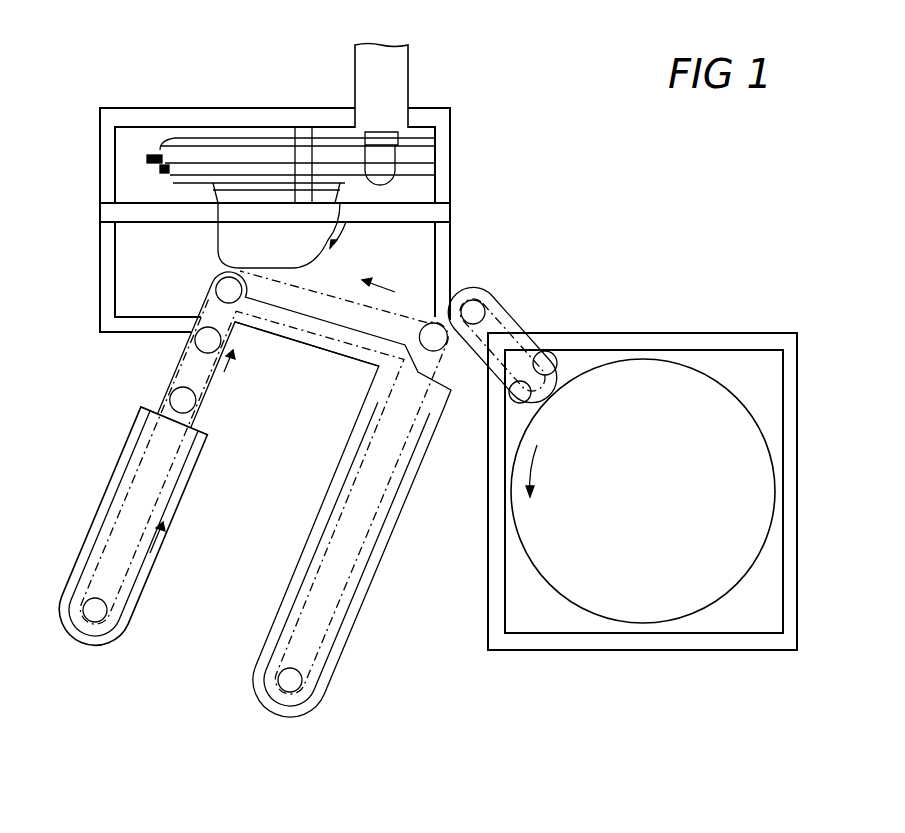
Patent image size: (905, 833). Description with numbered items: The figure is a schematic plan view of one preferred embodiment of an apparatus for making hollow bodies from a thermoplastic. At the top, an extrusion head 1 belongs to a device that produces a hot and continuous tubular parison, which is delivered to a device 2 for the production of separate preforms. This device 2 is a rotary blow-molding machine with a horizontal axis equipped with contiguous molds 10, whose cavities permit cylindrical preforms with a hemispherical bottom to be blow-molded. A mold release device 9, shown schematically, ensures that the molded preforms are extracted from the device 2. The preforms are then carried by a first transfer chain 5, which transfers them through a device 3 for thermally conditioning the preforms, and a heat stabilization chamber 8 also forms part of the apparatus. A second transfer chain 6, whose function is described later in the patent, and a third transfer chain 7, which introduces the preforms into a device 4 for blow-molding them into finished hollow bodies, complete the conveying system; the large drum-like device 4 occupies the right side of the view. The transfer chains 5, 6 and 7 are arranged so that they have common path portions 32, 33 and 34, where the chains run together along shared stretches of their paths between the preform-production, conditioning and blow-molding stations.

The extrusion head 1 is at (382, 167).
The device for the production of separate preforms 2 is at (180, 150).
The device for thermally conditioning the preforms 3 is at (133, 448).
The device for blow-molding the preforms into finished hollow bodies 4 is at (668, 563).
The first transfer chain 5 is at (117, 512).
The second transfer chain 6 is at (233, 325).
The third transfer chain 7 is at (502, 312).
The heat stabilization chamber 8 is at (360, 585).
The mold release device 9 is at (215, 243).
The molds 10 is at (162, 161).
The common path portion 32 is at (183, 352).
The common path portion 33 is at (203, 398).
The common path portion 34 is at (453, 327).